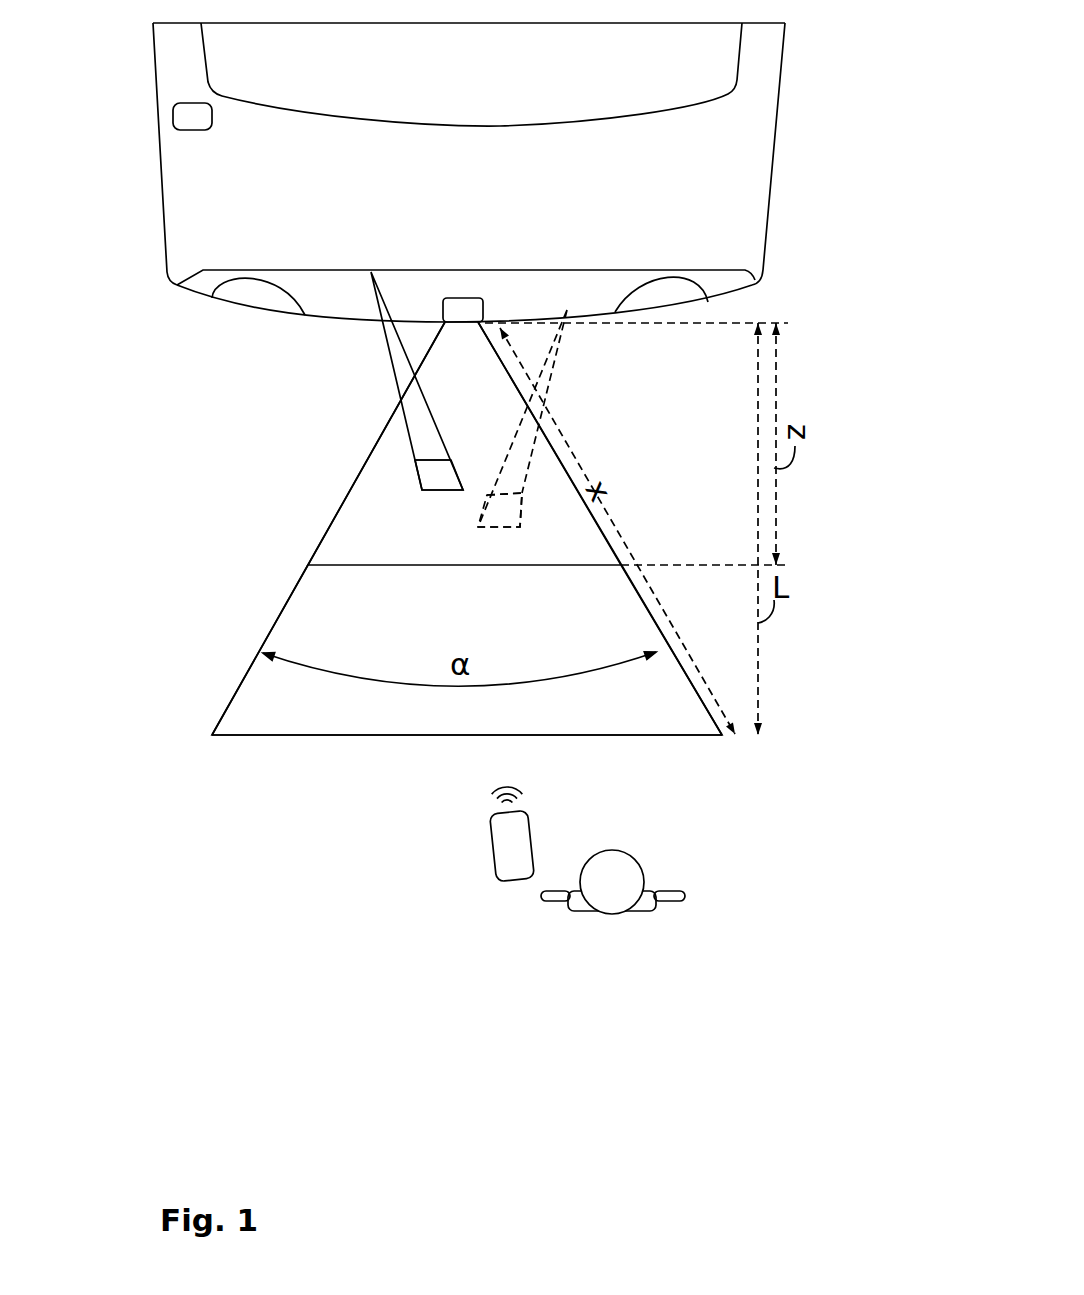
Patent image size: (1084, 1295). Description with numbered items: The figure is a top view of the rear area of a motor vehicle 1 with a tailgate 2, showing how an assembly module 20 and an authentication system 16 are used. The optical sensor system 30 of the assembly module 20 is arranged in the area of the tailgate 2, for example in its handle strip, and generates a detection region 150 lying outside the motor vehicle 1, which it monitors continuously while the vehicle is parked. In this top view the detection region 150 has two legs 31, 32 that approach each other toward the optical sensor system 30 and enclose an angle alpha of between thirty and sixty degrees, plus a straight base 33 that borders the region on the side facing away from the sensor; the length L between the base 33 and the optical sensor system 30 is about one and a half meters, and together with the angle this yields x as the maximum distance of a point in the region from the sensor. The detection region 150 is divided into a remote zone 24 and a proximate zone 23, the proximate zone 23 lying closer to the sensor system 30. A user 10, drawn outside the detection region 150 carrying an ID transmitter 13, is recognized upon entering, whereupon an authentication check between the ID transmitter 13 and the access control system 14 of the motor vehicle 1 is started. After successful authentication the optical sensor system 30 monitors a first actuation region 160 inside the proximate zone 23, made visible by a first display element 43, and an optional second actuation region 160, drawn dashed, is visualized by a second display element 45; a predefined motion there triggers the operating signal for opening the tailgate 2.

The motor vehicle 1 is at (500, 172).
The tailgate 2 is at (745, 187).
The user 10 is at (698, 906).
The ID transmitter 13 is at (515, 855).
The access control system 14 is at (190, 118).
The authentication system 16 is at (135, 205).
The assembly module 20 is at (329, 381).
The proximate zone 23 is at (383, 523).
The remote zone 24 is at (330, 615).
The optical sensor system 30 is at (443, 314).
The leg 31 is at (228, 702).
The leg 32 is at (683, 677).
The base 33 is at (313, 737).
The first display element 43 is at (371, 275).
The second display element 45 is at (572, 312).
The detection region 150 is at (448, 528).
The actuation region 160 is at (430, 482).